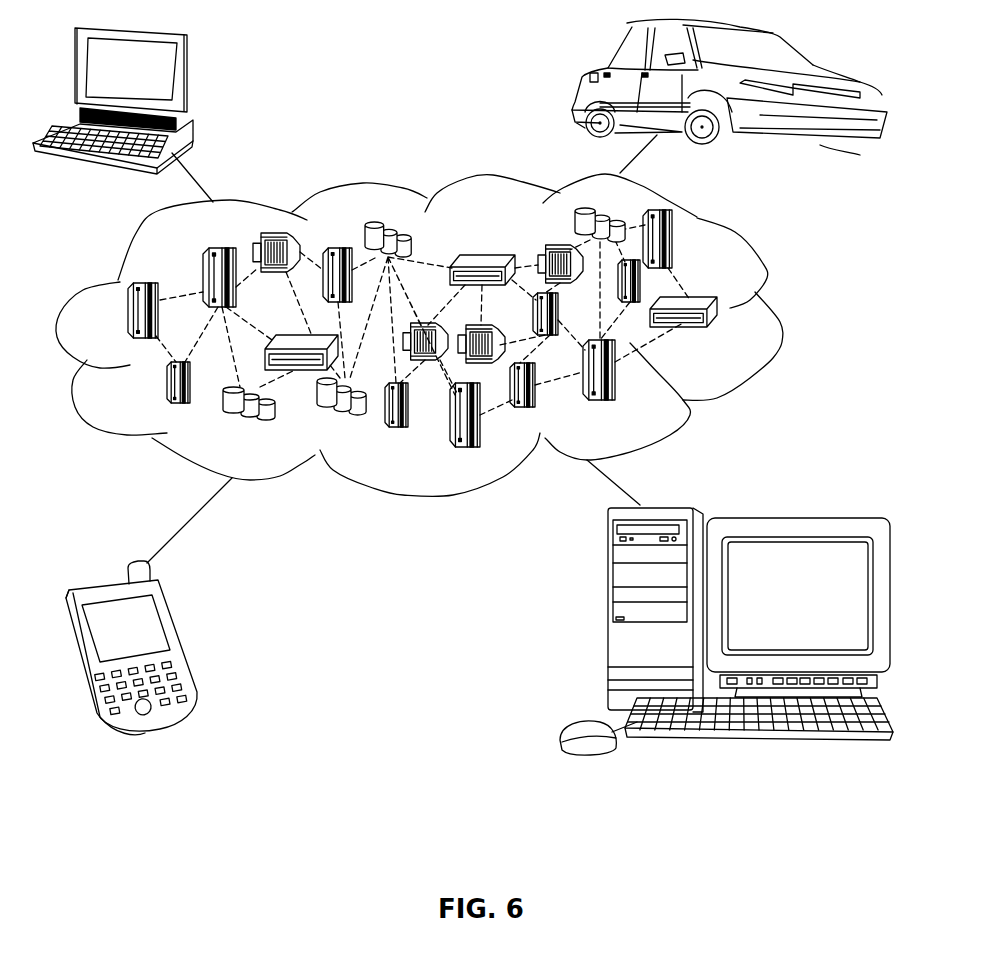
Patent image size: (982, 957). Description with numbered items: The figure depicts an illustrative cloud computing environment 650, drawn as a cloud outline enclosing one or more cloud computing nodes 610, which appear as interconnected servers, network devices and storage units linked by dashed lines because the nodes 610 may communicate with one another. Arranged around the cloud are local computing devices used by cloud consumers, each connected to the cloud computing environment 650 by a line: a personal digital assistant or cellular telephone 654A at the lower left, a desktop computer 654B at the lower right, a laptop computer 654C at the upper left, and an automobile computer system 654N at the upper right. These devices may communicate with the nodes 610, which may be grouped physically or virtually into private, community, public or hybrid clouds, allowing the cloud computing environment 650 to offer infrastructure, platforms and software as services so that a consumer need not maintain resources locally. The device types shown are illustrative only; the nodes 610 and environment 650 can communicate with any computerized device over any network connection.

The cloud computing nodes 610 is at (746, 336).
The cloud computing environment 650 is at (763, 270).
The personal digital assistant or cellular telephone 654A is at (183, 643).
The desktop computer 654B is at (612, 618).
The laptop computer 654C is at (190, 77).
The automobile computer system 654N is at (729, 87).